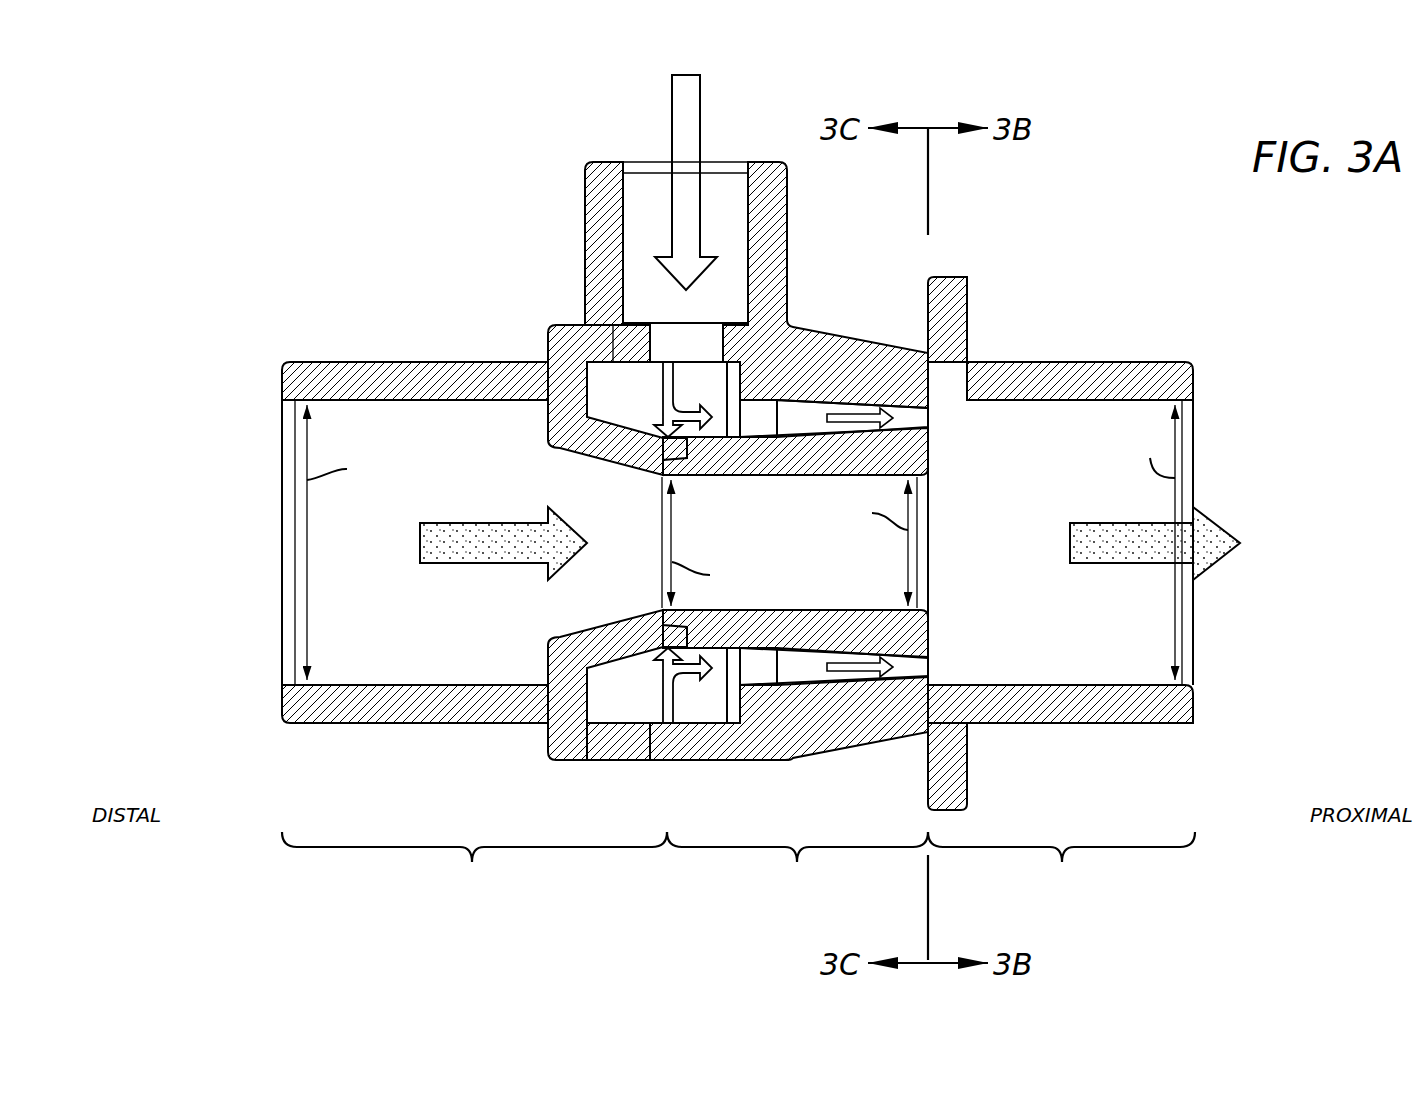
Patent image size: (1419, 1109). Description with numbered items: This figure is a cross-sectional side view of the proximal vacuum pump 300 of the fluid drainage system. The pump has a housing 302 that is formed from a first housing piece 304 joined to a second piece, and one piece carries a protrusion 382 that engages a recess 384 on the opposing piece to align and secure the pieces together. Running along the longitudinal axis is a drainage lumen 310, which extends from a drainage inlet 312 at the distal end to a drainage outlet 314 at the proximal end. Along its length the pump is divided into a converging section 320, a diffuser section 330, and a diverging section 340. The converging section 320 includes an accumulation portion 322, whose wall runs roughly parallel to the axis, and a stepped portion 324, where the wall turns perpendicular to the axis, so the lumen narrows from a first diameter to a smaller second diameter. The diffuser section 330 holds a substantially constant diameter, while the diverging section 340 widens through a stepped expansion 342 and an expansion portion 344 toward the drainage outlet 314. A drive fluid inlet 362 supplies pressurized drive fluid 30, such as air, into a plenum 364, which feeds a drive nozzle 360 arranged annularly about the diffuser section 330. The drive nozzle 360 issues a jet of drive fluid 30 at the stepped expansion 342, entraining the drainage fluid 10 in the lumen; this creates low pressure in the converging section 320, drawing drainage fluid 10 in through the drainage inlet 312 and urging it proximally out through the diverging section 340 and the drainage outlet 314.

The proximal vacuum pump 300 is at (266, 208).
The housing 302 is at (430, 288).
The first housing piece 304 is at (393, 362).
The drainage lumen 310 is at (378, 437).
The drainage inlet 312 is at (266, 458).
The drainage outlet 314 is at (1224, 624).
The converging section 320 is at (474, 862).
The accumulation portion 322 is at (445, 683).
The stepped portion 324 is at (556, 663).
The diffuser section 330 is at (795, 660).
The diverging section 340 is at (1061, 862).
The stepped expansion 342 is at (930, 641).
The expansion portion 344 is at (1079, 685).
The drive nozzle 360 is at (913, 418).
The drive fluid inlet 362 is at (650, 160).
The plenum 364 is at (618, 392).
The protrusion 382 is at (598, 349).
The recess 384 is at (600, 349).
The drive fluid 30 is at (702, 118).
The drainage fluid 10 is at (485, 523).